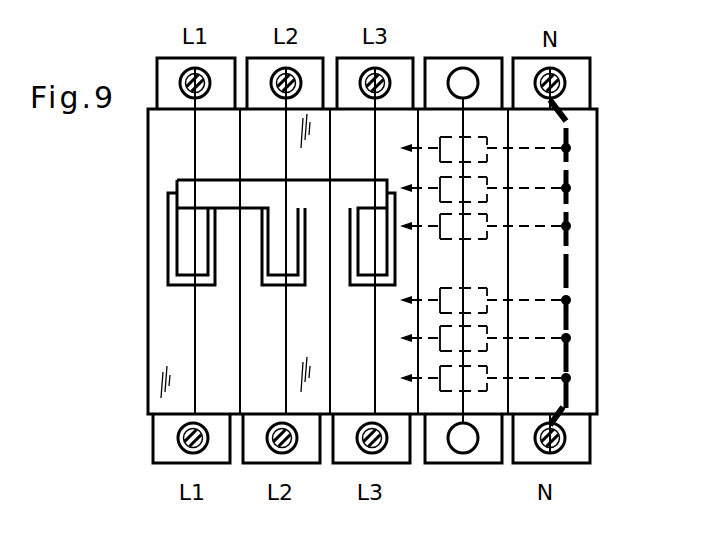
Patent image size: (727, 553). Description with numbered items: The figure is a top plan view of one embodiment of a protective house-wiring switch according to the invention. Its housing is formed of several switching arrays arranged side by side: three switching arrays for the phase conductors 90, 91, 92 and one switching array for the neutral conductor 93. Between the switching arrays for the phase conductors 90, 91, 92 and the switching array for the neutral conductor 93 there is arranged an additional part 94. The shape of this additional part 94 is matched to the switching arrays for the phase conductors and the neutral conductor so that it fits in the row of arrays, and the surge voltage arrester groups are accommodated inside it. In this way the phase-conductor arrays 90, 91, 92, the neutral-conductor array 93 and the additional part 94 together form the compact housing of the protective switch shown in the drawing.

The switching array for phase conductor 90 is at (162, 382).
The switching array for phase conductor 91 is at (260, 397).
The switching array for phase conductor 92 is at (348, 390).
The switching array for neutral conductor 93 is at (580, 207).
The additional part 94 is at (433, 405).